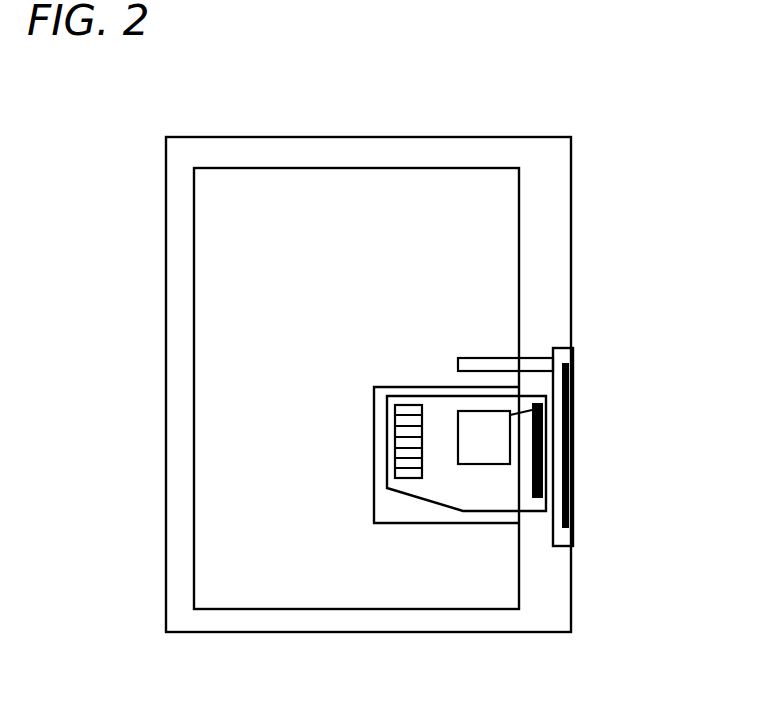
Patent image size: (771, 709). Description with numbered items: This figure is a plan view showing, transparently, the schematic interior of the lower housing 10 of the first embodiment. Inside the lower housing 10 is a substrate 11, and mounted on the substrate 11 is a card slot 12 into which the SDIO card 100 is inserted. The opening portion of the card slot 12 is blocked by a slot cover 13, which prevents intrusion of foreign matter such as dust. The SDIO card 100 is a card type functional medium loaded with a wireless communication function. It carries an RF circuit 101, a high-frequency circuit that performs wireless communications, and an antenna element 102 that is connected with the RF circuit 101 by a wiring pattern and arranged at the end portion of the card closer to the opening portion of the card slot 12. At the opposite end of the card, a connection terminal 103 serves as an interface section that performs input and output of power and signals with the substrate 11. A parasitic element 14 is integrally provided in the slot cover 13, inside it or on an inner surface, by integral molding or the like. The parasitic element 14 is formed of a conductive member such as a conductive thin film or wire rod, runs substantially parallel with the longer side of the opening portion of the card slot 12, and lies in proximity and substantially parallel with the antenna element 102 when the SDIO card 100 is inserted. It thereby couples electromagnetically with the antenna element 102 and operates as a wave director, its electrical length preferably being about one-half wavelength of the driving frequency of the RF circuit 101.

The lower housing 10 is at (281, 137).
The substrate 11 is at (410, 168).
The card slot 12 is at (430, 523).
The slot cover 13 is at (573, 447).
The parasitic element 14 is at (567, 498).
The SDIO card 100 is at (490, 513).
The RF circuit 101 is at (483, 411).
The antenna element 102 is at (541, 432).
The connection terminal 103 is at (407, 478).